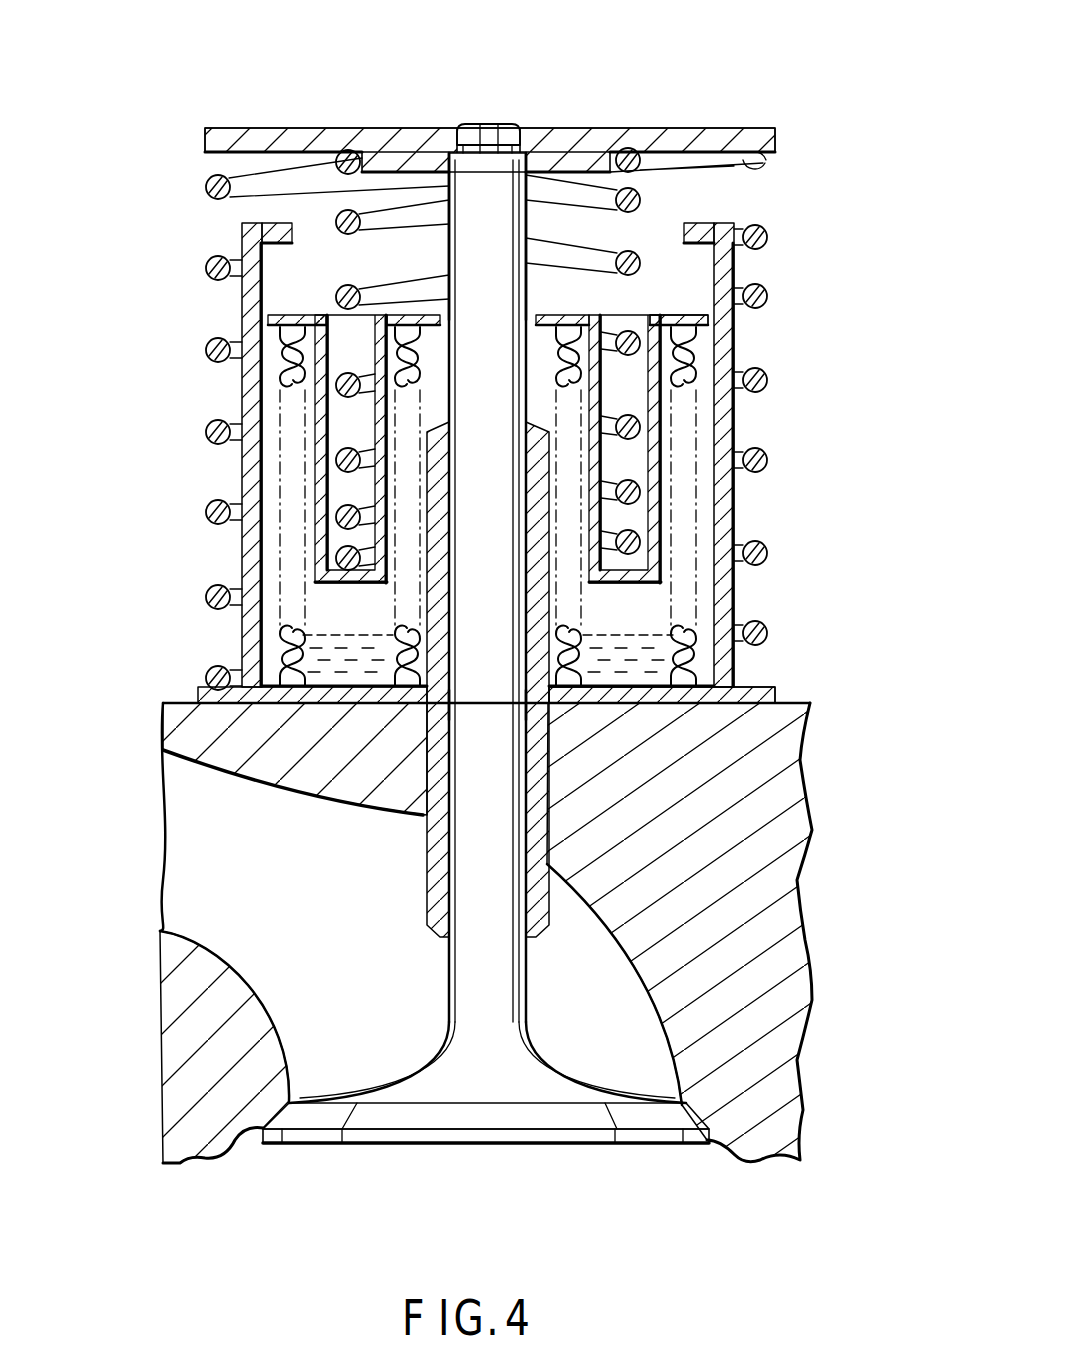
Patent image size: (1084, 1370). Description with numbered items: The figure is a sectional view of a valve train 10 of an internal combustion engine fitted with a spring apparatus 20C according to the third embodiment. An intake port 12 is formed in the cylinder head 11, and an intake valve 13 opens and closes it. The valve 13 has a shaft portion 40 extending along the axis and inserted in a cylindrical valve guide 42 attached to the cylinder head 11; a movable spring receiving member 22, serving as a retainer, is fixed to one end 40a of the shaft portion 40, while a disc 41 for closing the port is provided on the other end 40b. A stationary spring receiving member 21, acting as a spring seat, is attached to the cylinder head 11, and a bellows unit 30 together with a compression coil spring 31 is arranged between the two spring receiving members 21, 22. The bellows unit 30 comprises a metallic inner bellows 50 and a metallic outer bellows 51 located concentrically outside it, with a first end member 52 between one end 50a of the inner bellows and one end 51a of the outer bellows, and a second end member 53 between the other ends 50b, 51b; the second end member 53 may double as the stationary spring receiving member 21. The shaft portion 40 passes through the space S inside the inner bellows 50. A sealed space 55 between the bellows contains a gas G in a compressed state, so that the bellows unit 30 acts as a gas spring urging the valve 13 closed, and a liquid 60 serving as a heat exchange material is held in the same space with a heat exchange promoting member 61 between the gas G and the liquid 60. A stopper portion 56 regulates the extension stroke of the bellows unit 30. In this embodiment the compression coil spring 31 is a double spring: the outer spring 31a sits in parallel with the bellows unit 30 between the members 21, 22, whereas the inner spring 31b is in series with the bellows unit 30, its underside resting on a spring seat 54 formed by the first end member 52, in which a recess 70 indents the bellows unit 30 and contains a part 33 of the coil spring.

The valve train 10 is at (763, 97).
The cylinder head 11 is at (775, 918).
The intake port 12 is at (640, 1044).
The intake valve 13 is at (516, 1085).
The spring apparatus 20C is at (525, 494).
The stationary spring receiving member 21 is at (305, 704).
The movable spring receiving member 22 is at (468, 149).
The bellows unit 30 is at (280, 370).
The compression coil spring 31 is at (440, 420).
The outer spring 31a is at (208, 352).
The inner spring 31b is at (370, 243).
The part of compression coil spring 33 is at (337, 462).
The shaft portion 40 is at (486, 634).
The one end of shaft portion 40a is at (478, 124).
The other end of shaft portion 40b is at (447, 972).
The disc 41 is at (425, 1147).
The valve guide 42 is at (430, 790).
The inner bellows 50 is at (545, 382).
The one end of inner bellows 50a is at (553, 318).
The other end of inner bellows 50b is at (562, 707).
The outer bellows 51 is at (711, 503).
The one end of outer bellows 51a is at (690, 312).
The other end of outer bellows 51b is at (682, 694).
The first end member 52 is at (292, 326).
The second end member 53 is at (349, 680).
The spring seat 54 is at (313, 575).
The sealed space 55 is at (328, 598).
The stopper portion 56 is at (285, 224).
The liquid 60 is at (637, 663).
The heat exchange promoting member 61 is at (600, 640).
The recess 70 is at (643, 443).
The space inside inner bellows S is at (433, 315).
The gas G is at (637, 600).